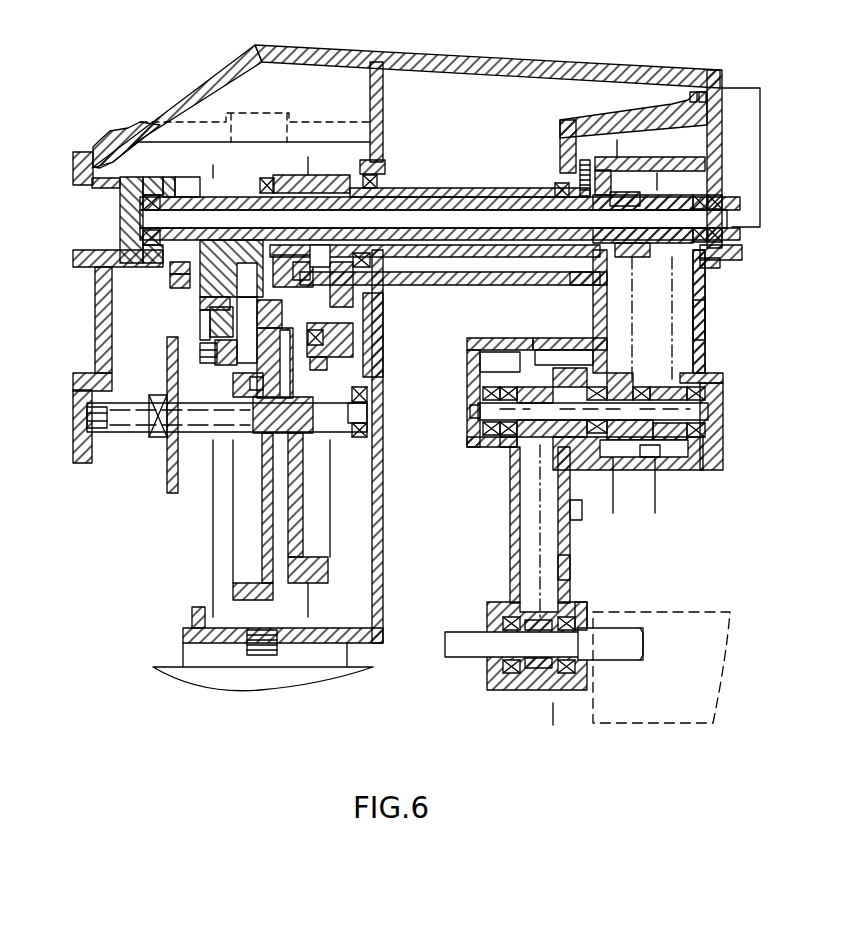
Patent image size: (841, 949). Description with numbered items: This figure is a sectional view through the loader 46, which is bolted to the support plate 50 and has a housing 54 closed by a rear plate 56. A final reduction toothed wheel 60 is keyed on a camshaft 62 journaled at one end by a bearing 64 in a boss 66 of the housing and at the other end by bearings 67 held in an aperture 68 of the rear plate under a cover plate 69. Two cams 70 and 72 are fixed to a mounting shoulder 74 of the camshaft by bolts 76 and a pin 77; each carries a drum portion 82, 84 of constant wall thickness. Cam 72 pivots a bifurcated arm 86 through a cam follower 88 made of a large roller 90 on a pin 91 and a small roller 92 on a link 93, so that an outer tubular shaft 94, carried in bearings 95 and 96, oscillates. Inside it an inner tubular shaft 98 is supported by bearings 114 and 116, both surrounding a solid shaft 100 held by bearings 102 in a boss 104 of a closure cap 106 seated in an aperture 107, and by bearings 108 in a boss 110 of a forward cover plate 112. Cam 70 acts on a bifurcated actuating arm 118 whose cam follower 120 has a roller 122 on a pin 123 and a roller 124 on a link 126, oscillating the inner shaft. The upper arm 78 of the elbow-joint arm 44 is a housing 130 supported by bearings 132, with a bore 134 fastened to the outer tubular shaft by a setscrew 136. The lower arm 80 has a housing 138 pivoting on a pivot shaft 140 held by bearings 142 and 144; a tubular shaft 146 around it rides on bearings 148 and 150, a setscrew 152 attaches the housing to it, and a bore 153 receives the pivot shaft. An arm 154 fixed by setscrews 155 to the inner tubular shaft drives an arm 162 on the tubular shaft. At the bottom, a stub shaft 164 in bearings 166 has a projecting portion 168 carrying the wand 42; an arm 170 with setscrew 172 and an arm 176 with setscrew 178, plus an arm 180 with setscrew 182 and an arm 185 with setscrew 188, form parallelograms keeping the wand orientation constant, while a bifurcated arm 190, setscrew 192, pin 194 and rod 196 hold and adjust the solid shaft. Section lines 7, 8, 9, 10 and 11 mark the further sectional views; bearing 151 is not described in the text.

The part pick-up wand 42 is at (678, 612).
The elbow-joint arm 44 is at (584, 513).
The loader 46 is at (478, 58).
The support plate 50 is at (172, 667).
The loader housing 54 is at (128, 127).
The rear plate 56 is at (105, 335).
The final reduction toothed wheel 60 is at (167, 468).
The camshaft 62 is at (196, 433).
The bearing 64 is at (363, 397).
The boss 66 is at (372, 452).
The bearings 67 is at (103, 433).
The aperture 68 is at (100, 393).
The cover plate 69 is at (75, 432).
The cam 70 is at (232, 522).
The cam 72 is at (333, 532).
The mounting shoulder 74 is at (270, 445).
The bolts 76 is at (250, 393).
The pin 77 is at (286, 393).
The upper arm 78 is at (705, 312).
The lower arm 80 is at (571, 568).
The cam drum portion 82 is at (243, 586).
The cam drum portion 84 is at (326, 570).
The bifurcated arm 86 is at (298, 262).
The cam follower 88 is at (360, 320).
The roller 90 is at (323, 262).
The pin 91 is at (356, 291).
The roller 92 is at (318, 358).
The link 93 is at (352, 330).
The outer tubular shaft 94 is at (396, 189).
The bearing 95 is at (378, 176).
The bearing 96 is at (555, 189).
The inner tubular shaft 98 is at (426, 205).
The solid shaft 100 is at (478, 247).
The bearings 102 is at (178, 178).
The boss 104 is at (162, 171).
The closure cap 106 is at (78, 183).
The aperture 107 is at (74, 173).
The bearings 108 is at (711, 190).
The boss 110 is at (736, 256).
The forward cover plate 112 is at (716, 120).
The bearing 114 is at (268, 181).
The bearing 116 is at (588, 198).
The bifurcated actuating arm 118 is at (205, 311).
The cam follower 120 is at (212, 328).
The roller 122 is at (245, 280).
The pin 123 is at (200, 301).
The roller 124 is at (256, 350).
The link 126 is at (215, 366).
The upper arm housing 130 is at (468, 339).
The bearings 132 is at (704, 268).
The bore 134 is at (590, 284).
The radial setscrew 136 is at (570, 126).
The lower arm housing 138 is at (588, 603).
The pivot shaft 140 is at (476, 412).
The bearing 142 is at (480, 441).
The bearing 144 is at (713, 397).
The tubular shaft 146 is at (587, 456).
The bearing 148 is at (648, 388).
The bearing 150 is at (592, 385).
The bearing 151 is at (502, 447).
The setscrew 152 is at (590, 340).
The bore 153 is at (522, 387).
The arm 154 is at (655, 257).
The setscrews 155 is at (650, 181).
The arm 162 is at (641, 380).
The stub shaft 164 is at (458, 657).
The bearings 166 is at (576, 623).
The projecting portion 168 is at (620, 660).
The arm 170 is at (525, 603).
The radial setscrew 172 is at (540, 672).
The arm 176 is at (512, 481).
The setscrew 178 is at (545, 410).
The arm 180 is at (700, 377).
The setscrew 182 is at (688, 441).
The arm 185 is at (670, 266).
The setscrew 188 is at (670, 210).
The bifurcated arm 190 is at (208, 180).
The radial setscrew 192 is at (193, 183).
The pin 194 is at (170, 270).
The rod 196 is at (170, 283).
The section line 7 is at (213, 165).
The section line 8 is at (308, 157).
The section line 9 is at (617, 140).
The section line 10 is at (657, 178).
The section line 11 is at (522, 357).